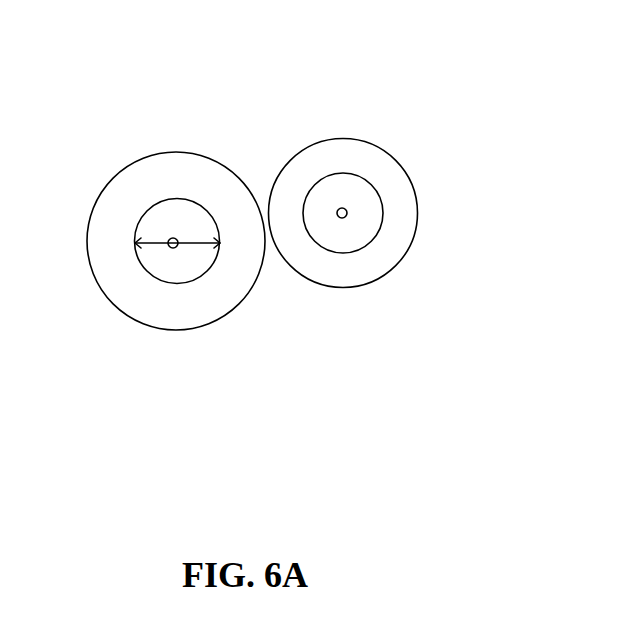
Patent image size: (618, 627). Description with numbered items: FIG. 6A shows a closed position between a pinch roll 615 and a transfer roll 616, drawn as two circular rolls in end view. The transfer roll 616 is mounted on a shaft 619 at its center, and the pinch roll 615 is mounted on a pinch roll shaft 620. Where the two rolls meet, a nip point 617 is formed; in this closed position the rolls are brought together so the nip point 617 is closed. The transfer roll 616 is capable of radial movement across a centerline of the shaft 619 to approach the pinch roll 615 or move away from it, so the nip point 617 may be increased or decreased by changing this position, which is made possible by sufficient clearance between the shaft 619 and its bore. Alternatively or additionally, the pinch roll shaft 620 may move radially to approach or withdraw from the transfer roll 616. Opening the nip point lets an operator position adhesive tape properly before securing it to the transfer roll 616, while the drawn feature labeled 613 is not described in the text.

The inner disc 613 is at (150, 247).
The pinch roll 615 is at (342, 138).
The transfer roll 616 is at (170, 318).
The nip point 617 is at (257, 145).
The shaft 619 is at (172, 238).
The pinch roll shaft 620 is at (346, 210).